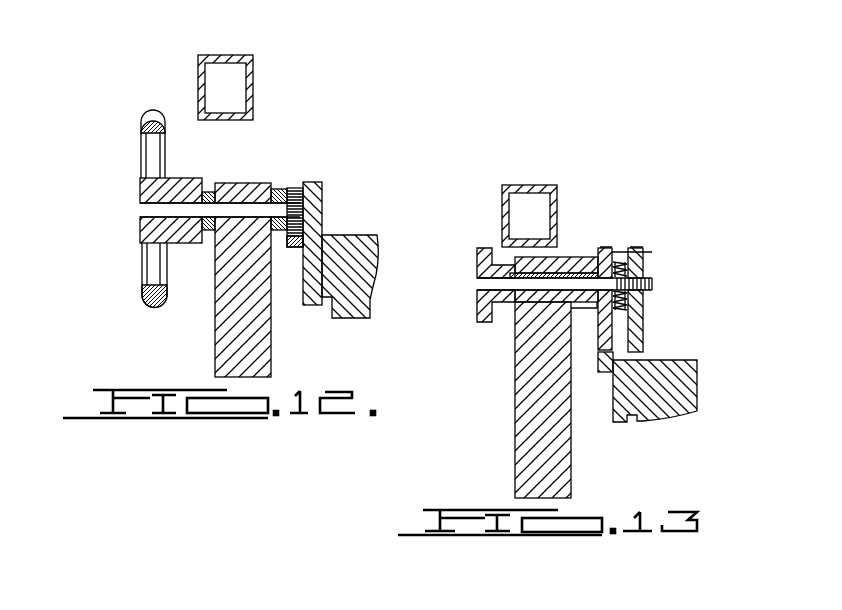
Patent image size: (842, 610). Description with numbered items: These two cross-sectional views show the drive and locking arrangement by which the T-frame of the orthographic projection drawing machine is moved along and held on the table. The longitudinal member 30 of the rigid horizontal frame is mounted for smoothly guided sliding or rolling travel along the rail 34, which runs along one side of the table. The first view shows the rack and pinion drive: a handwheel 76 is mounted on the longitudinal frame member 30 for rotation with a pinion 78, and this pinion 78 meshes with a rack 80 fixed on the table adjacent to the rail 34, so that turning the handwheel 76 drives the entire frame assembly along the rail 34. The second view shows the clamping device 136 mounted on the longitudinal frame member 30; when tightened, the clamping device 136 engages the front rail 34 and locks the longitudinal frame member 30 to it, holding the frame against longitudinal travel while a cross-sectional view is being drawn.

In FIG. 12, the longitudinal member 30 is at (255, 85).
In FIG. 13, the longitudinal member 30 is at (530, 418).
In FIG. 12, the rail 34 is at (318, 207).
In FIG. 13, the rail 34 is at (630, 318).
In FIG. 12, the handwheel 76 is at (150, 261).
In FIG. 12, the pinion 78 is at (290, 189).
In FIG. 12, the rack 80 is at (301, 247).
In FIG. 13, the rack 80 is at (613, 362).
In FIG. 13, the clamping device 136 is at (633, 268).